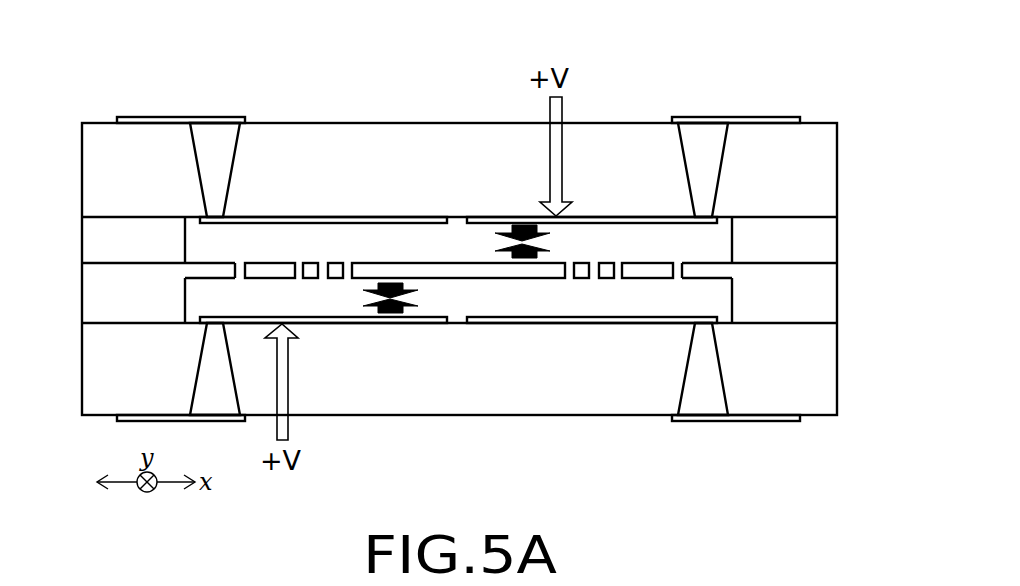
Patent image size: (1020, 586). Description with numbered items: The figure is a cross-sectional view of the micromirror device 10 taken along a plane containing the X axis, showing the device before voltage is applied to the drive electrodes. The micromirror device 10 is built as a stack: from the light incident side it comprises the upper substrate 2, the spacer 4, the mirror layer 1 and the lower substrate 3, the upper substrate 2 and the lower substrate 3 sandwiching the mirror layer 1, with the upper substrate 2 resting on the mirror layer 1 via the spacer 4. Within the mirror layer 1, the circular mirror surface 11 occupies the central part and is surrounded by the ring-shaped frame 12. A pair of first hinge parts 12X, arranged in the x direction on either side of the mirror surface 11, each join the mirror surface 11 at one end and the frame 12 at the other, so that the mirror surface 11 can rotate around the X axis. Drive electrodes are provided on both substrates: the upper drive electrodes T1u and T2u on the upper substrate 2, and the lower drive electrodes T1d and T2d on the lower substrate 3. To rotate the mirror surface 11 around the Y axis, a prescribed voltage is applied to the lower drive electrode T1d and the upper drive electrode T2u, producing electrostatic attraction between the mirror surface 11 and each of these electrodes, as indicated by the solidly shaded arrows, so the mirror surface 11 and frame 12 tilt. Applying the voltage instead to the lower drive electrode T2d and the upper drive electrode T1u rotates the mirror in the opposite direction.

The micromirror device 10 is at (765, 53).
The mirror layer 1 is at (815, 298).
The upper substrate 2 is at (815, 168).
The lower substrate 3 is at (815, 383).
The spacer 4 is at (815, 236).
The mirror surface 11 is at (450, 269).
The frame 12 is at (285, 272).
The first hinge parts 12X is at (322, 257).
The upper drive electrode T1u is at (434, 223).
The upper drive electrode T2u is at (566, 223).
The lower drive electrode T1d is at (332, 317).
The lower drive electrode T2d is at (480, 317).